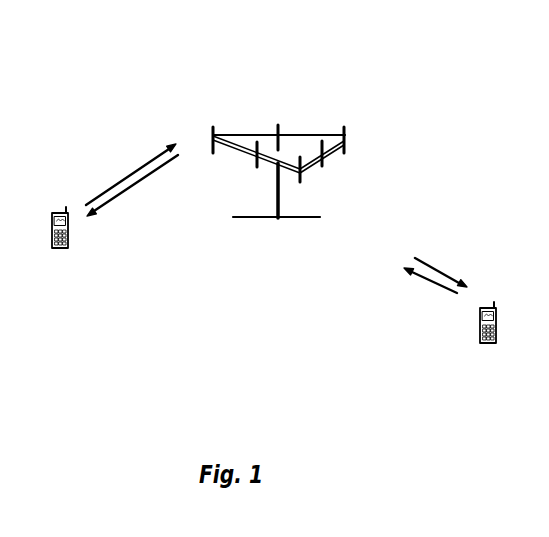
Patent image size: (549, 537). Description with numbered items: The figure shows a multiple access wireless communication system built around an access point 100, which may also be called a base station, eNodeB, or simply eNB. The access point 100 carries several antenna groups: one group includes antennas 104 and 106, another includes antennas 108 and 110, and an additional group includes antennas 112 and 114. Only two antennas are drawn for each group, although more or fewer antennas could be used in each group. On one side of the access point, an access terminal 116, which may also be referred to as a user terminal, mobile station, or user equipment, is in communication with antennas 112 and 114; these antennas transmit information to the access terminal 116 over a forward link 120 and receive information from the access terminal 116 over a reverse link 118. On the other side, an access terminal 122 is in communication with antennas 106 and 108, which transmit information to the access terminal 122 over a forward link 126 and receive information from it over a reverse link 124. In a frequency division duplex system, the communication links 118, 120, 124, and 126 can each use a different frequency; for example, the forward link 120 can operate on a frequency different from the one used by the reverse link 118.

The access point 100 is at (263, 218).
The antenna 104 is at (302, 179).
The antenna 106 is at (325, 167).
The antenna 108 is at (346, 146).
The antenna 110 is at (280, 126).
The antenna 112 is at (217, 135).
The antenna 114 is at (258, 167).
The access terminal 116 is at (63, 212).
The reverse link 118 is at (129, 172).
The forward link 120 is at (141, 185).
The access terminal 122 is at (492, 304).
The reverse link 124 is at (422, 282).
The forward link 126 is at (443, 271).